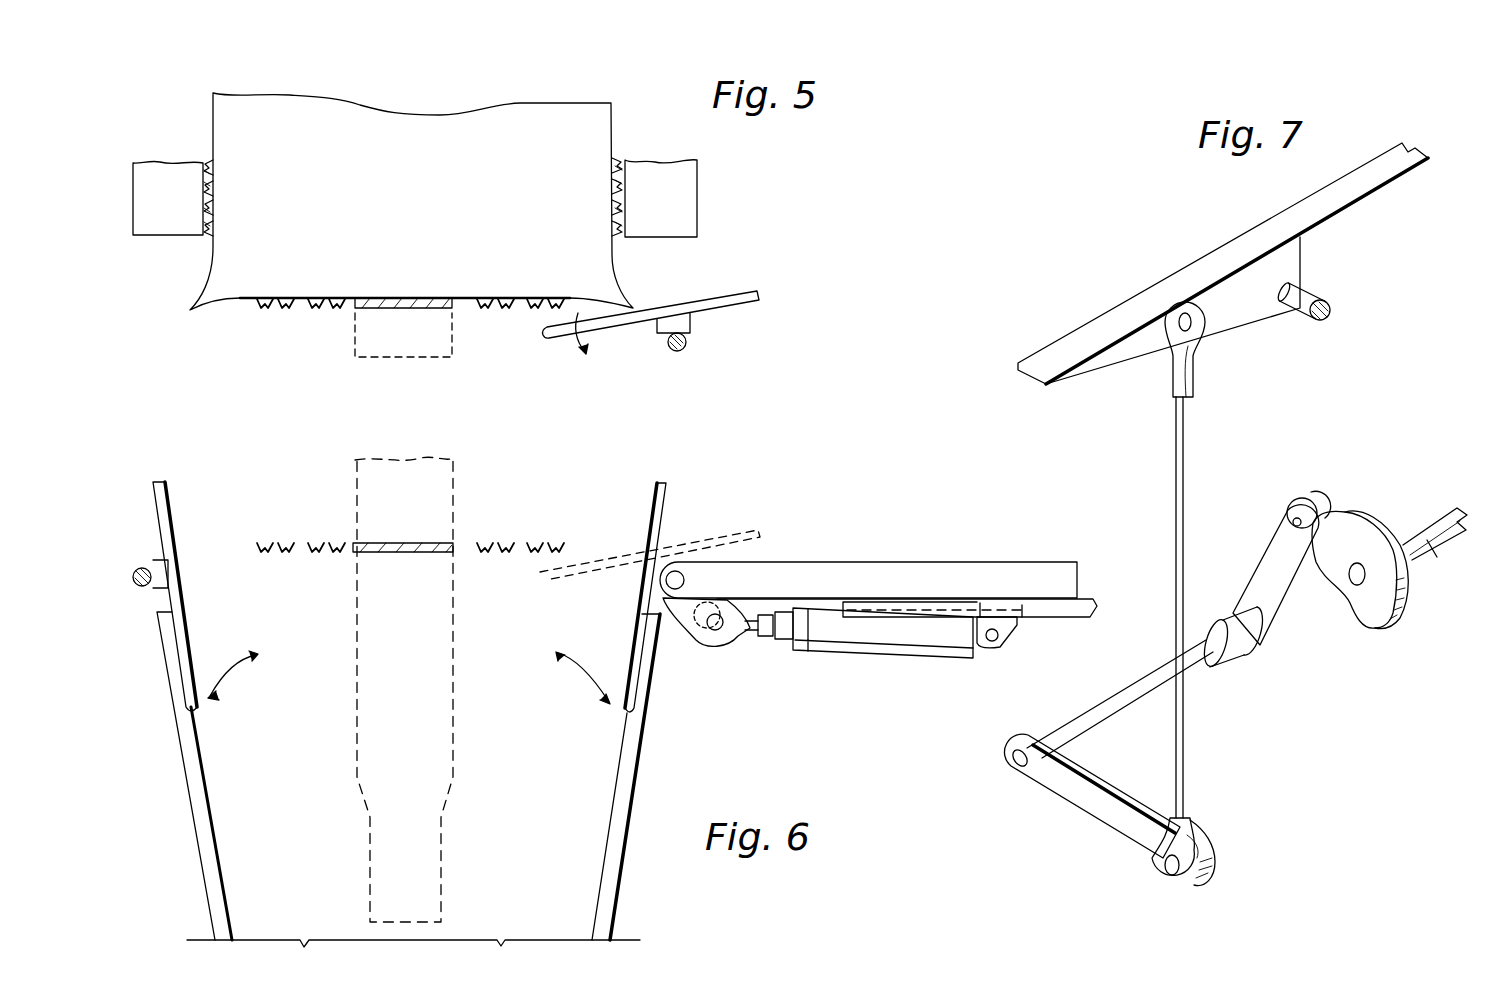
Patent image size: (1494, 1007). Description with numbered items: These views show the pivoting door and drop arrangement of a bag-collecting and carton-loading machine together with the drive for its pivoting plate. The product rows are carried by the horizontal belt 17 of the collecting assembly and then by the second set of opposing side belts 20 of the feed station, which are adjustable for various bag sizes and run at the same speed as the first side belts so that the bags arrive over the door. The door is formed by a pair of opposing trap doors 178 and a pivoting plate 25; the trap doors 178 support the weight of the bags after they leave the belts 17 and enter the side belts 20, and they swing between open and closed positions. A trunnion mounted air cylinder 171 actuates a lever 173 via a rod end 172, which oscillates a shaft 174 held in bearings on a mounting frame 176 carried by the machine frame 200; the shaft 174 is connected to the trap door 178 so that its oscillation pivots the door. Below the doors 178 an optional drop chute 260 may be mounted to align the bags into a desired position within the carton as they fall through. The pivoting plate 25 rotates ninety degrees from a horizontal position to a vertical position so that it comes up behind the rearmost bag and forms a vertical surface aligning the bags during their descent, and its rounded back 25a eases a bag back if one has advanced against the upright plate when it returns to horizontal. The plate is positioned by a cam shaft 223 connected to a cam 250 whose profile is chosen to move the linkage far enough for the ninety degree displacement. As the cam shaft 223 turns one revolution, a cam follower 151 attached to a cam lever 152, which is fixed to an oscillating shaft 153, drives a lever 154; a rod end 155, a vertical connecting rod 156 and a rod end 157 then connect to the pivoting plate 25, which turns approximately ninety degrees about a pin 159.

In FIG. 5, the horizontal belt 17 is at (272, 310).
In FIG. 6, the horizontal belt 17 is at (266, 540).
In FIG. 5, the second set of opposing side belts 20 is at (200, 213).
In FIG. 5, the pivoting plate 25 is at (382, 303).
In FIG. 6, the pivoting plate 25 is at (456, 700).
In FIG. 7, the pivoting plate 25 is at (1062, 345).
In FIG. 7, the rounded back 25a is at (1122, 372).
In FIG. 7, the cam follower 151 is at (1320, 492).
In FIG. 7, the cam lever 152 is at (1262, 558).
In FIG. 7, the oscillating shaft 153 is at (1130, 688).
In FIG. 7, the lever 154 is at (1107, 813).
In FIG. 7, the rod end 155 is at (1160, 880).
In FIG. 7, the vertical connecting rod 156 is at (1185, 468).
In FIG. 7, the rod end 157 is at (1194, 375).
In FIG. 7, the pin 159 is at (1332, 316).
In FIG. 6, the trunnion mounted air cylinder 171 is at (850, 645).
In FIG. 6, the rod end 172 is at (751, 640).
In FIG. 6, the lever 173 is at (690, 640).
In FIG. 5, the shaft 174 is at (690, 342).
In FIG. 6, the shaft 174 is at (690, 583).
In FIG. 5, the mounting frame 176 is at (167, 162).
In FIG. 5, the trap door 178 is at (745, 292).
In FIG. 6, the trap door 178 is at (183, 600).
In FIG. 6, the frame 200 is at (910, 560).
In FIG. 7, the cam shaft 223 is at (1435, 546).
In FIG. 7, the cam 250 is at (1373, 518).
In FIG. 6, the drop chute 260 is at (205, 826).